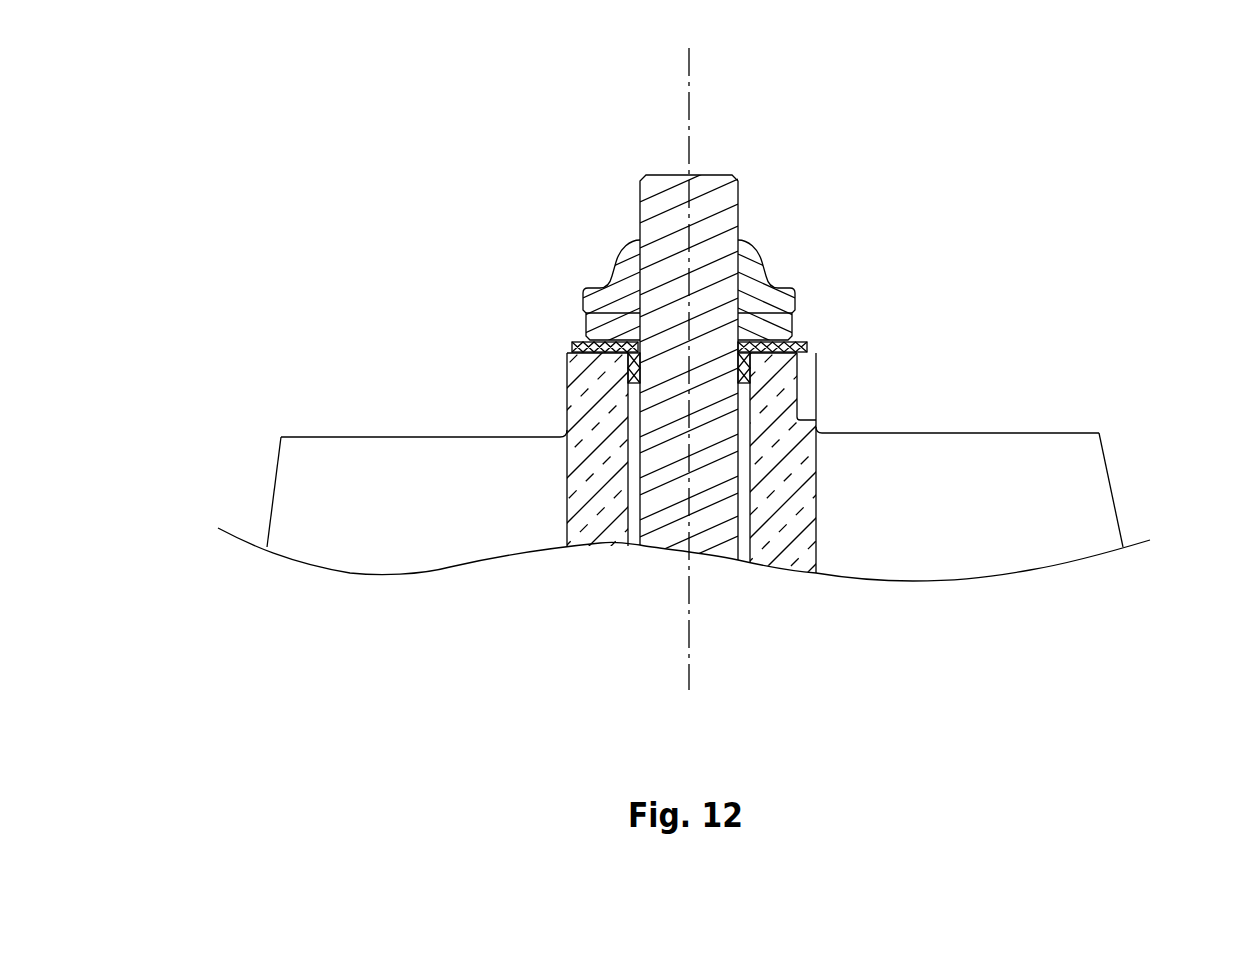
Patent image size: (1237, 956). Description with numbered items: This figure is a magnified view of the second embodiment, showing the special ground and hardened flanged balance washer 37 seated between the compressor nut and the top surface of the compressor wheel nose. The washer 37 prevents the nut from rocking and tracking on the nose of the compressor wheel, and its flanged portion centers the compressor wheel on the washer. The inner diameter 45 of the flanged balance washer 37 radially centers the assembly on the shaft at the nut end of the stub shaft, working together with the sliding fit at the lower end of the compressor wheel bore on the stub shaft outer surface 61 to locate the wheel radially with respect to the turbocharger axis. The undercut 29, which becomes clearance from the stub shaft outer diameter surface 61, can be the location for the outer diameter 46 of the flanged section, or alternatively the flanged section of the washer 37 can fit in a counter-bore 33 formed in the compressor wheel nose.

The undercut 29 is at (755, 498).
The counter-bore 33 is at (757, 400).
The flanged balance washer 37 is at (640, 362).
The inner diameter 45 is at (645, 360).
The outer diameter 46 is at (748, 376).
The stub shaft outer surface 61 is at (637, 480).